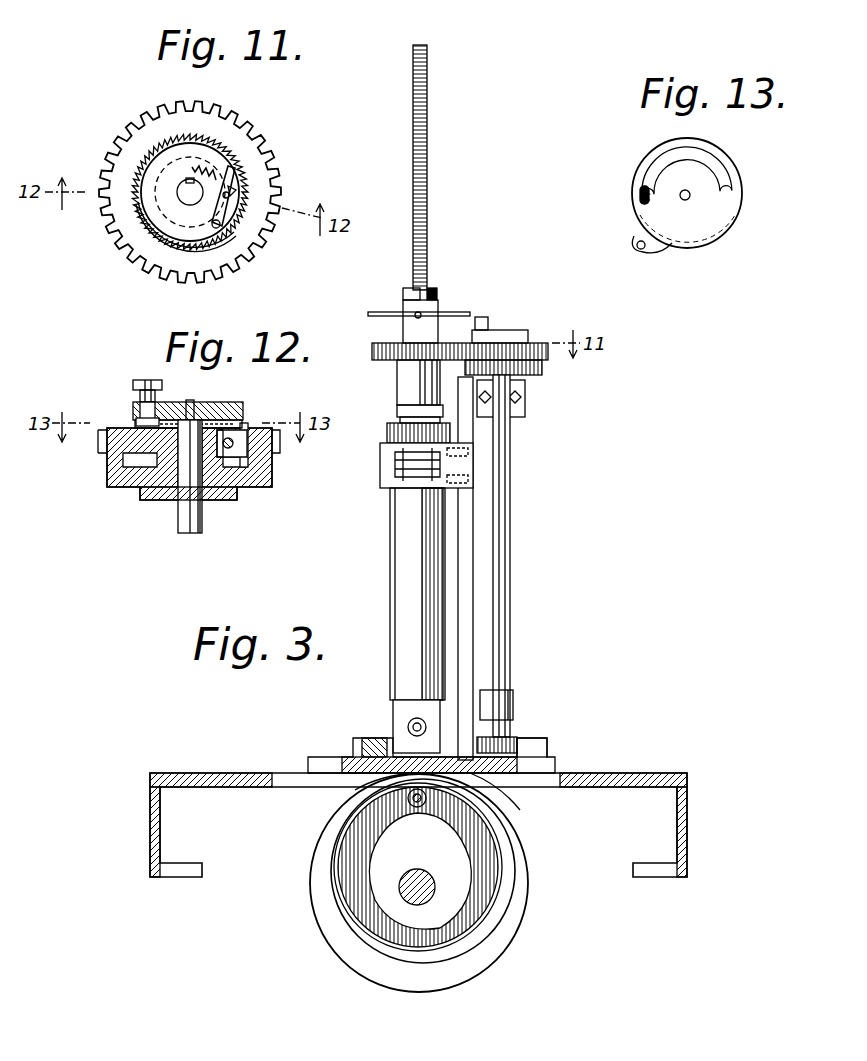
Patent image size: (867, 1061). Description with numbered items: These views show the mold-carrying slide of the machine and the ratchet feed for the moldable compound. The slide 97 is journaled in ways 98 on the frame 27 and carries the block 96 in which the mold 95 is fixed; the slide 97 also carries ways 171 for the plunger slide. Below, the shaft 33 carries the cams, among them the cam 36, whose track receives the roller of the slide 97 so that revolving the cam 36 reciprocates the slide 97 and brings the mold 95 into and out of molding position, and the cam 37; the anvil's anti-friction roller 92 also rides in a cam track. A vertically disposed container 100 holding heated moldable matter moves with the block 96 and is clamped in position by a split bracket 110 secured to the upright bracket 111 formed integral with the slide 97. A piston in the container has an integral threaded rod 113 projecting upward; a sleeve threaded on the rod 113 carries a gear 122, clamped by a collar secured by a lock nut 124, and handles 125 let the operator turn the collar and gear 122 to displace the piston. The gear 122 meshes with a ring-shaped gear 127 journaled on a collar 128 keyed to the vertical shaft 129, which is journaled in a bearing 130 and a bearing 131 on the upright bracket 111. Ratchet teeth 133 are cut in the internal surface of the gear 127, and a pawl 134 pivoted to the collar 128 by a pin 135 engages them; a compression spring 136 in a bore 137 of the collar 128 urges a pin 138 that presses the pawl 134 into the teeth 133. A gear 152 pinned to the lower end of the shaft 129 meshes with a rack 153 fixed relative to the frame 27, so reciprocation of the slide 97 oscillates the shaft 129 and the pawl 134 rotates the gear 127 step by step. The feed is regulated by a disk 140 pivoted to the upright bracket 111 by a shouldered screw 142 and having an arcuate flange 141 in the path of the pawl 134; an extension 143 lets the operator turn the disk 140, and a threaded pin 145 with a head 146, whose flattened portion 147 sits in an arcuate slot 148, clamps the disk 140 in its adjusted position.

In FIG. 3, the frame 27 is at (660, 775).
In FIG. 3, the shaft 33 is at (435, 887).
In FIG. 3, the cam 36 is at (495, 950).
In FIG. 3, the cam 37 is at (430, 950).
In FIG. 3, the anti-friction roller 92 is at (417, 807).
In FIG. 3, the mold 95 is at (365, 790).
In FIG. 3, the block 96 is at (398, 712).
In FIG. 3, the slide 97 is at (490, 790).
In FIG. 3, the ways 98 is at (328, 765).
In FIG. 3, the container 100 is at (388, 588).
In FIG. 3, the split bracket 110 is at (385, 470).
In FIG. 3, the upright bracket 111 is at (465, 558).
In FIG. 3, the threaded rod 113 is at (427, 200).
In FIG. 3, the gear 122 is at (375, 352).
In FIG. 3, the lock nut 124 is at (405, 292).
In FIG. 3, the handles 125 is at (458, 312).
In FIG. 12, the gear 127 is at (280, 448).
In FIG. 3, the gear 127 is at (548, 352).
In FIG. 12, the collar 128 is at (165, 498).
In FIG. 11, the shaft 129 is at (190, 192).
In FIG. 12, the shaft 129 is at (140, 380).
In FIG. 3, the shaft 129 is at (510, 490).
In FIG. 3, the bearing 130 is at (525, 407).
In FIG. 3, the bearing 131 is at (513, 703).
In FIG. 11, the ratchet teeth 133 is at (150, 148).
In FIG. 12, the ratchet teeth 133 is at (250, 425).
In FIG. 11, the pawl 134 is at (240, 190).
In FIG. 11, the pin 135 is at (230, 232).
In FIG. 11, the compression spring 136 is at (205, 172).
In FIG. 11, the bore 137 is at (216, 170).
In FIG. 11, the pin 138 is at (243, 186).
In FIG. 12, the disk 140 is at (212, 410).
In FIG. 13, the disk 140 is at (718, 218).
In FIG. 12, the arcuate flange 141 is at (262, 472).
In FIG. 13, the arcuate flange 141 is at (722, 240).
In FIG. 12, the shouldered screw 142 is at (190, 400).
In FIG. 13, the extension 143 is at (655, 255).
In FIG. 12, the threaded pin 145 is at (140, 405).
In FIG. 13, the threaded pin 145 is at (645, 190).
In FIG. 12, the head 146 is at (136, 426).
In FIG. 13, the flattened portion 147 is at (640, 197).
In FIG. 13, the arcuate slot 148 is at (705, 157).
In FIG. 3, the gear 152 is at (512, 738).
In FIG. 3, the rack 153 is at (535, 745).
In FIG. 3, the ways 171 is at (378, 745).